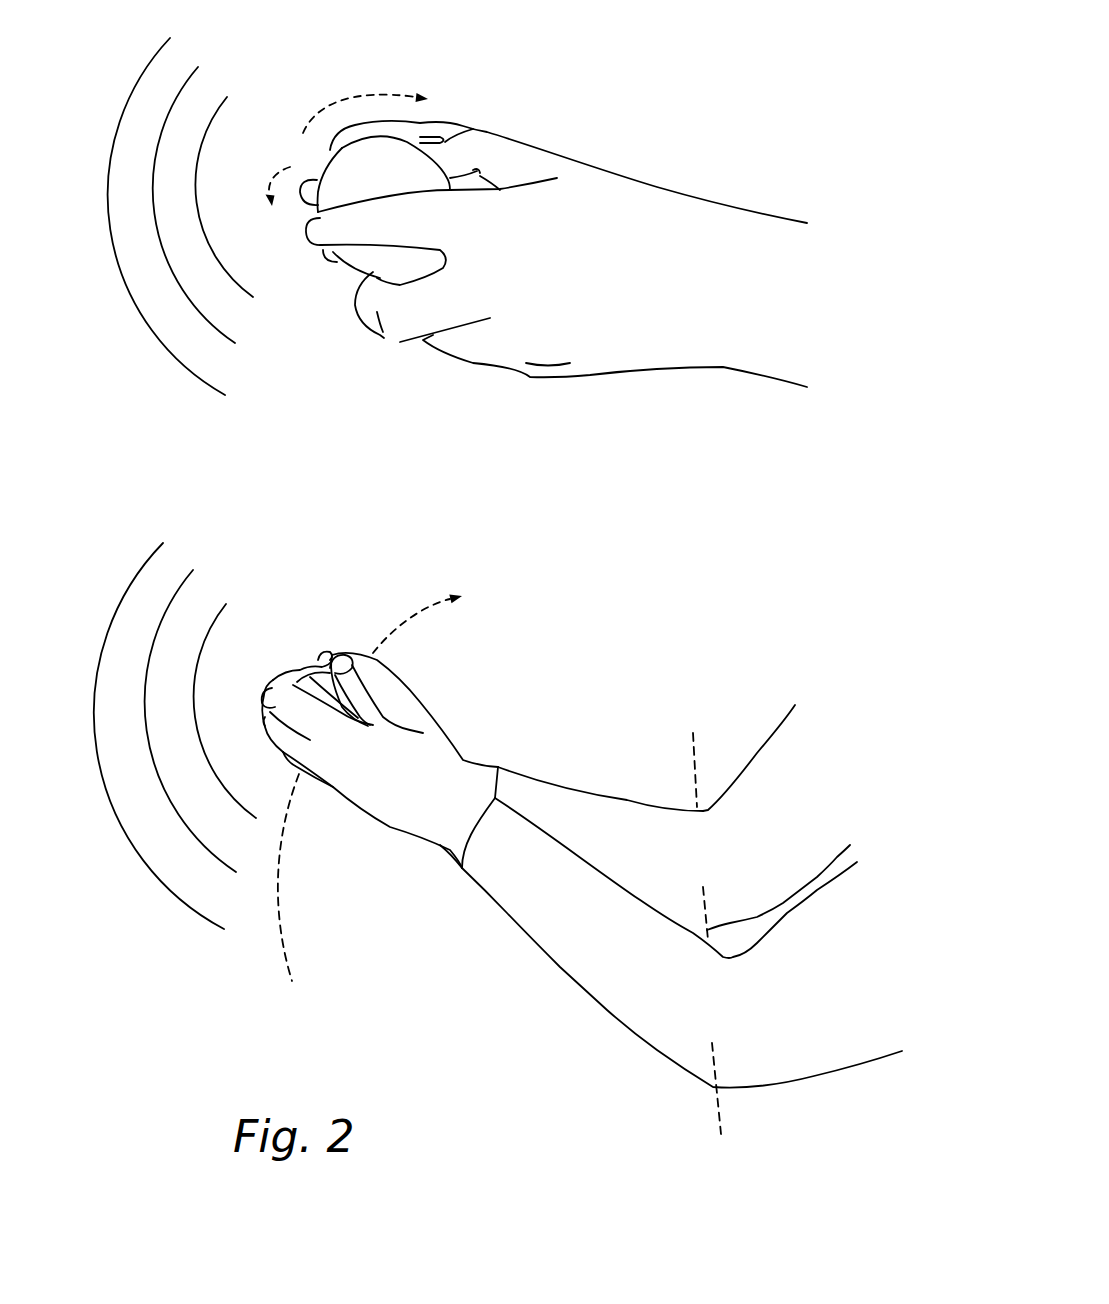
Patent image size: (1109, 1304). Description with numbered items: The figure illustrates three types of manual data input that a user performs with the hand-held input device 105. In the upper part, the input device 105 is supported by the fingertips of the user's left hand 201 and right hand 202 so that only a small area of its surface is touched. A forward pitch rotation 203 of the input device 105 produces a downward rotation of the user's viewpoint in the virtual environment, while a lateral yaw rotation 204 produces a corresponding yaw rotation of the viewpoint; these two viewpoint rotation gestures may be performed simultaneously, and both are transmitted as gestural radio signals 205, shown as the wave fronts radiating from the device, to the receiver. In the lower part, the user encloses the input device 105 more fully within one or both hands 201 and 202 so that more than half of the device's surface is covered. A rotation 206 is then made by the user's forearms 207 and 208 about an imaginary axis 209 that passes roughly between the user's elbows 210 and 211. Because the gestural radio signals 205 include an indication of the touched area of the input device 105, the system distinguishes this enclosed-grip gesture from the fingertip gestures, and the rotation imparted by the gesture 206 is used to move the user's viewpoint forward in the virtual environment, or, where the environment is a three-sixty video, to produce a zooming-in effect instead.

The input device 105 is at (400, 184).
The left hand 201 is at (707, 304).
The right hand 202 is at (440, 120).
The forward pitch rotation 203 is at (348, 97).
The lateral yaw rotation 204 is at (287, 170).
The gestural radio signals 205 is at (190, 373).
The rotation 206 is at (407, 623).
The forearm 207 is at (588, 817).
The forearm 208 is at (587, 940).
The imaginary axis 209 is at (698, 757).
The elbow 210 is at (740, 1058).
The elbow 211 is at (722, 901).